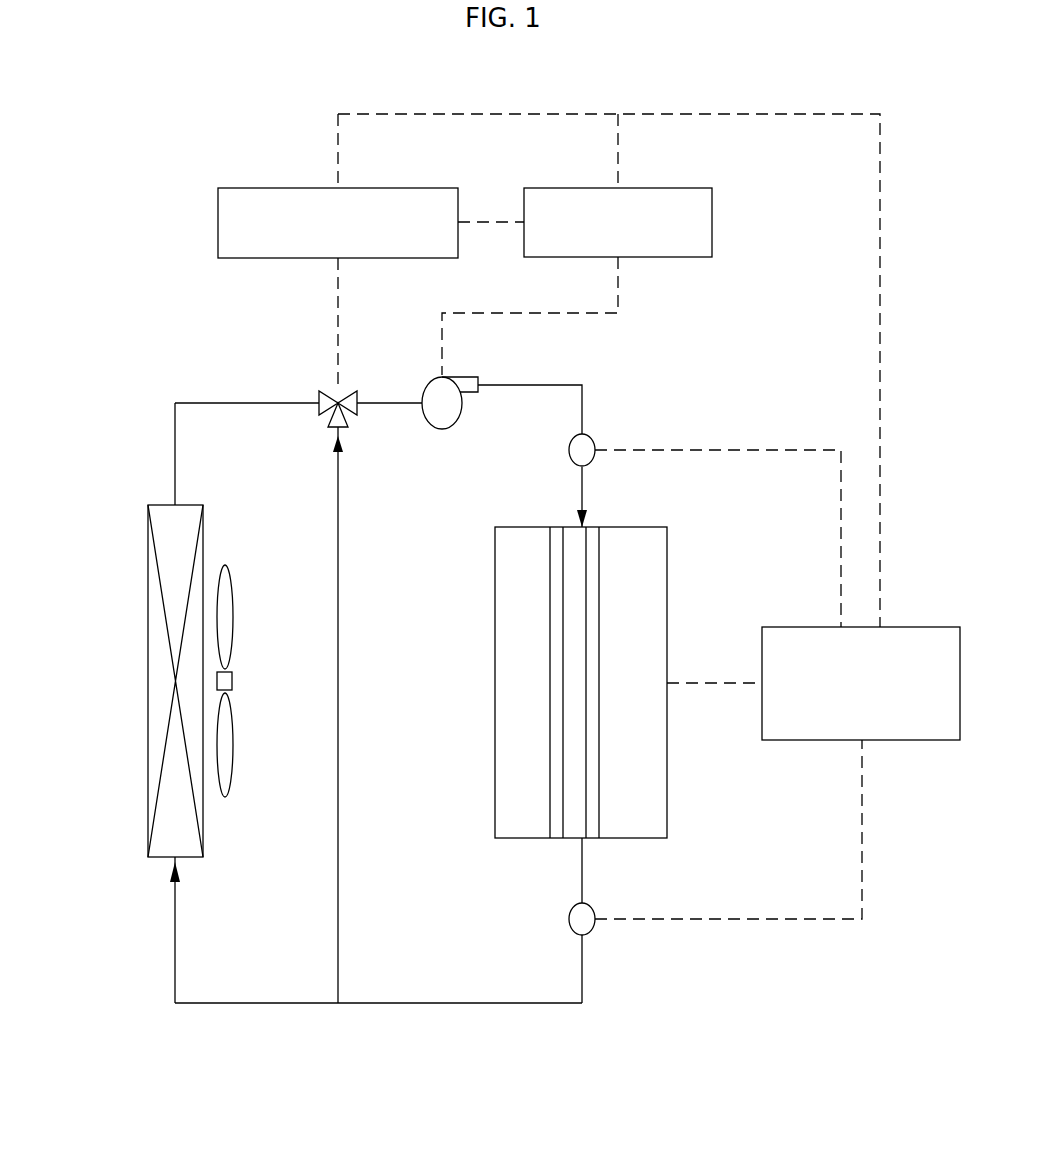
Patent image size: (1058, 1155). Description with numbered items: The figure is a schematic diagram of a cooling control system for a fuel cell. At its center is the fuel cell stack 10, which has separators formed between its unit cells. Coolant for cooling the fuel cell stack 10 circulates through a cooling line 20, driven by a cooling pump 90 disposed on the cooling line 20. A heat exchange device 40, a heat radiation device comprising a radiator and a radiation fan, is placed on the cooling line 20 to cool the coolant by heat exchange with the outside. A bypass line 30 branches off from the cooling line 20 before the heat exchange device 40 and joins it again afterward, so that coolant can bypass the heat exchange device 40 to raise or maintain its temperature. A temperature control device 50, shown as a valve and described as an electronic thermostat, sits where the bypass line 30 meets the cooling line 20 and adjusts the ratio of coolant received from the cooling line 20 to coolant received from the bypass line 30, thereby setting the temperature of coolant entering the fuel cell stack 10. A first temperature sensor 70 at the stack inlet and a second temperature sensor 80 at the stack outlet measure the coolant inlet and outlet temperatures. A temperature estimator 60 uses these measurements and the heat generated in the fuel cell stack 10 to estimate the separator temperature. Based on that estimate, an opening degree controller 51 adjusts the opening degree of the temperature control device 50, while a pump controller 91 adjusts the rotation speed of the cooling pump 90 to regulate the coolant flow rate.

The fuel cell stack 10 is at (495, 683).
The cooling line 20 is at (312, 1005).
The bypass line 30 is at (340, 823).
The heat exchange device 40 is at (148, 717).
The temperature control device 50 is at (318, 377).
The opening degree controller 51 is at (265, 188).
The temperature estimator 60 is at (895, 740).
The first temperature sensor 70 is at (590, 437).
The second temperature sensor 80 is at (588, 932).
The cooling pump 90 is at (442, 429).
The pump controller 91 is at (712, 222).